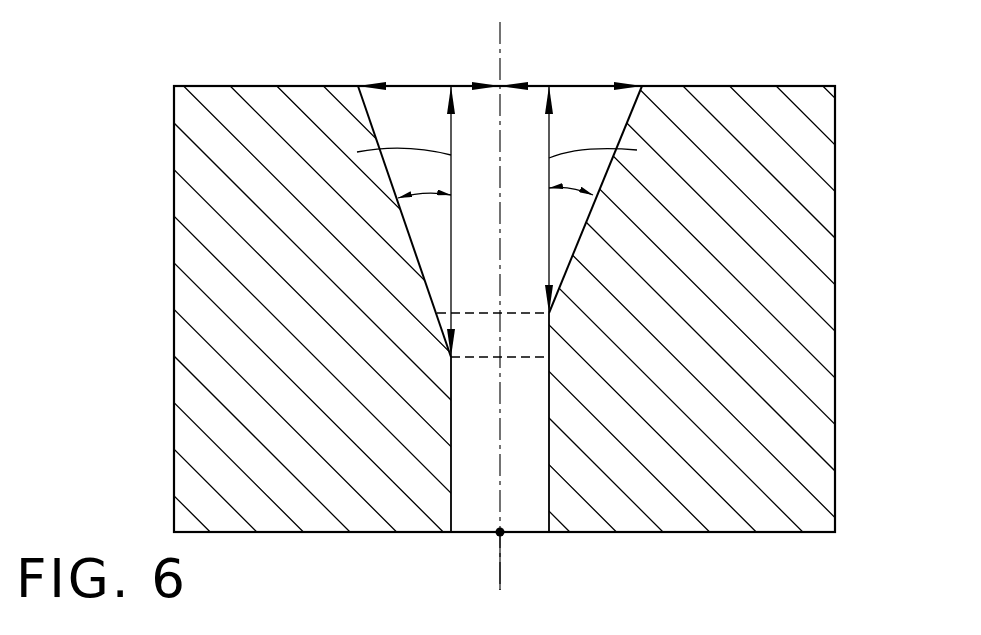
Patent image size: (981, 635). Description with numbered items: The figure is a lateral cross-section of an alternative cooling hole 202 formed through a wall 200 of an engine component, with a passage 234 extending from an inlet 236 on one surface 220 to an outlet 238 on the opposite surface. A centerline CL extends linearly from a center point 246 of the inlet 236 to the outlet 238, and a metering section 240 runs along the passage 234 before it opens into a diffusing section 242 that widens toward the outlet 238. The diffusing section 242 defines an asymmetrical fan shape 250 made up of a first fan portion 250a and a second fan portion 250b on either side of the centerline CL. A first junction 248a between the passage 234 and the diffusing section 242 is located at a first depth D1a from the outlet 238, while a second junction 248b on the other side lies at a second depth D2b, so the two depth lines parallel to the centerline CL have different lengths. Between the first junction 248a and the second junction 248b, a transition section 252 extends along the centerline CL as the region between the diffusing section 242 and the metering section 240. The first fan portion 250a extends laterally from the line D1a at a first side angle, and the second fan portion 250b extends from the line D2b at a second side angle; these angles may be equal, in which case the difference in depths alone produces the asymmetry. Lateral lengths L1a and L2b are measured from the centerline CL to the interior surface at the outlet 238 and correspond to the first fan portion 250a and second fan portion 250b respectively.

The wall 200 is at (777, 192).
The cooling hole 202 is at (400, 97).
The surface 220 is at (555, 618).
The passage 234 is at (527, 422).
The inlet 236 is at (472, 533).
The outlet 238 is at (600, 86).
The metering section 240 is at (530, 483).
The diffusing section 242 is at (470, 278).
The center point 246 is at (503, 536).
The first junction 248a is at (477, 361).
The second junction 248b is at (525, 314).
The asymmetrical fan shape 250 is at (522, 130).
The first fan portion 250a is at (446, 125).
The second fan portion 250b is at (622, 125).
The transition section 252 is at (530, 344).
The centerline CL is at (502, 38).
The lateral length L1a is at (393, 86).
The lateral length L2b is at (573, 84).
The first depth D1a is at (378, 154).
The second depth D2b is at (619, 154).